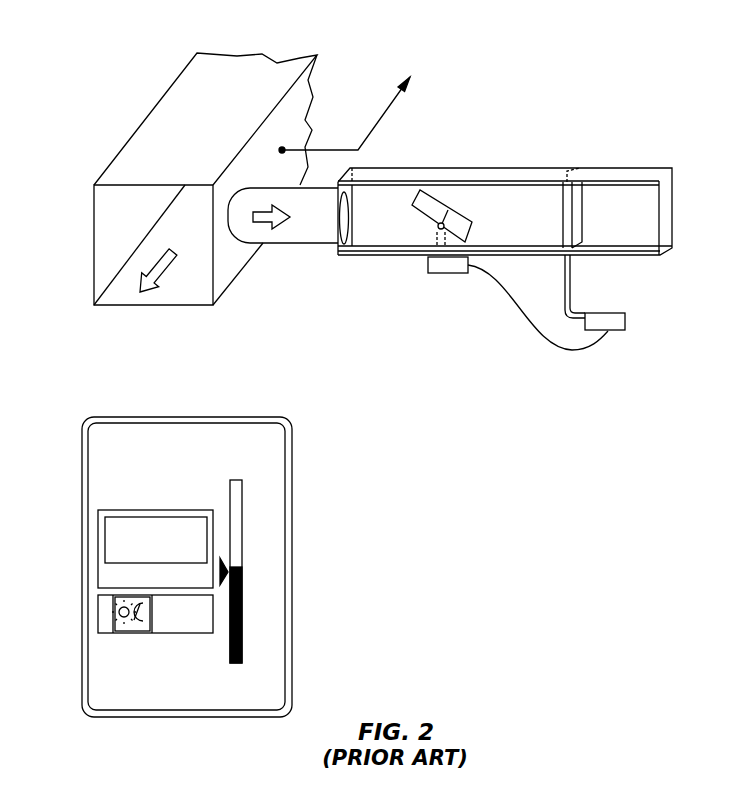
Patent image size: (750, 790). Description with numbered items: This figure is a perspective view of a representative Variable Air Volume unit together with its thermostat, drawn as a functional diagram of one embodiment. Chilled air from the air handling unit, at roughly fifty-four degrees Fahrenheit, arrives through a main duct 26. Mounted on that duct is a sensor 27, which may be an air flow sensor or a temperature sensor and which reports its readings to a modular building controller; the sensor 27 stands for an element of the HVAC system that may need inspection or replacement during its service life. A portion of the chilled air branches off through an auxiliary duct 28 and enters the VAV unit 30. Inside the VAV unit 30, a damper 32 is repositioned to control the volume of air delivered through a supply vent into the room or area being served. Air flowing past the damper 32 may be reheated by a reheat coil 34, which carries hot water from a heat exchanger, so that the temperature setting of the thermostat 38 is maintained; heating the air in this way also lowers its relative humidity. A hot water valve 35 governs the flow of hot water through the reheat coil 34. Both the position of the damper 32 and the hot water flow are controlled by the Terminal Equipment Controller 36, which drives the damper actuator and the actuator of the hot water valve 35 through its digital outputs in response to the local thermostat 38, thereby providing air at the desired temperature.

The main duct 26 is at (135, 133).
The sensor 27 is at (282, 150).
The auxiliary duct 28 is at (285, 245).
The VAV unit 30 is at (543, 173).
The damper 32 is at (472, 218).
The reheat coil 34 is at (602, 212).
The hot water valve 35 is at (613, 331).
The Terminal Equipment Controller 36 is at (448, 273).
The thermostat 38 is at (225, 417).